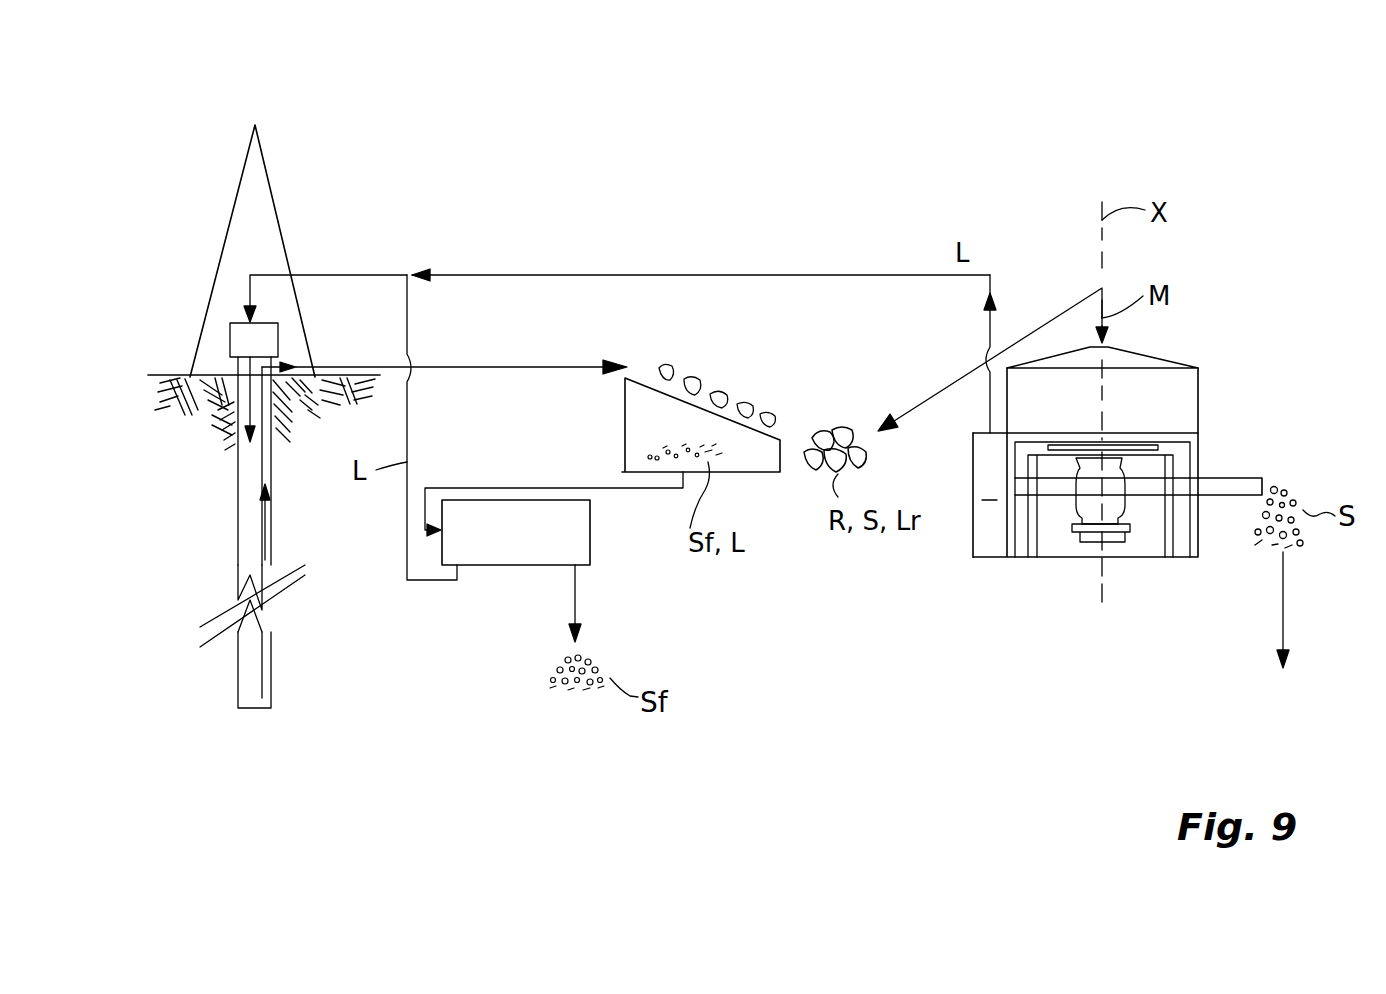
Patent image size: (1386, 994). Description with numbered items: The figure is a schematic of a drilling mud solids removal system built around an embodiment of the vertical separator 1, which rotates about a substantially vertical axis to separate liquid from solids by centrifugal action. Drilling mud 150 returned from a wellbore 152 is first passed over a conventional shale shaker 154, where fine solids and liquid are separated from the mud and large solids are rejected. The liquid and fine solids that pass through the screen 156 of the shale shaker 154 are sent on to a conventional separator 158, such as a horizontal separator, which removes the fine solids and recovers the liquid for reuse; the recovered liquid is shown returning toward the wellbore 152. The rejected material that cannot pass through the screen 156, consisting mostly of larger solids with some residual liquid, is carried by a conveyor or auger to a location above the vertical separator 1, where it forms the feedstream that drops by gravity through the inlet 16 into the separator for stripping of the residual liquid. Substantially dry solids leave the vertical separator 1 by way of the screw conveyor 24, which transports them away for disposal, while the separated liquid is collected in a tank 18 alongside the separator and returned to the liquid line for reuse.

The vertical separator 1 is at (1218, 342).
The inlet 16 is at (1108, 347).
The liquid tank 18 is at (970, 528).
The screw conveyor 24 is at (1226, 480).
The drilling mud 150 is at (478, 368).
The wellbore 152 is at (238, 518).
The shale shaker 154 is at (625, 425).
The screen 156 is at (757, 426).
The separator 158 is at (528, 547).